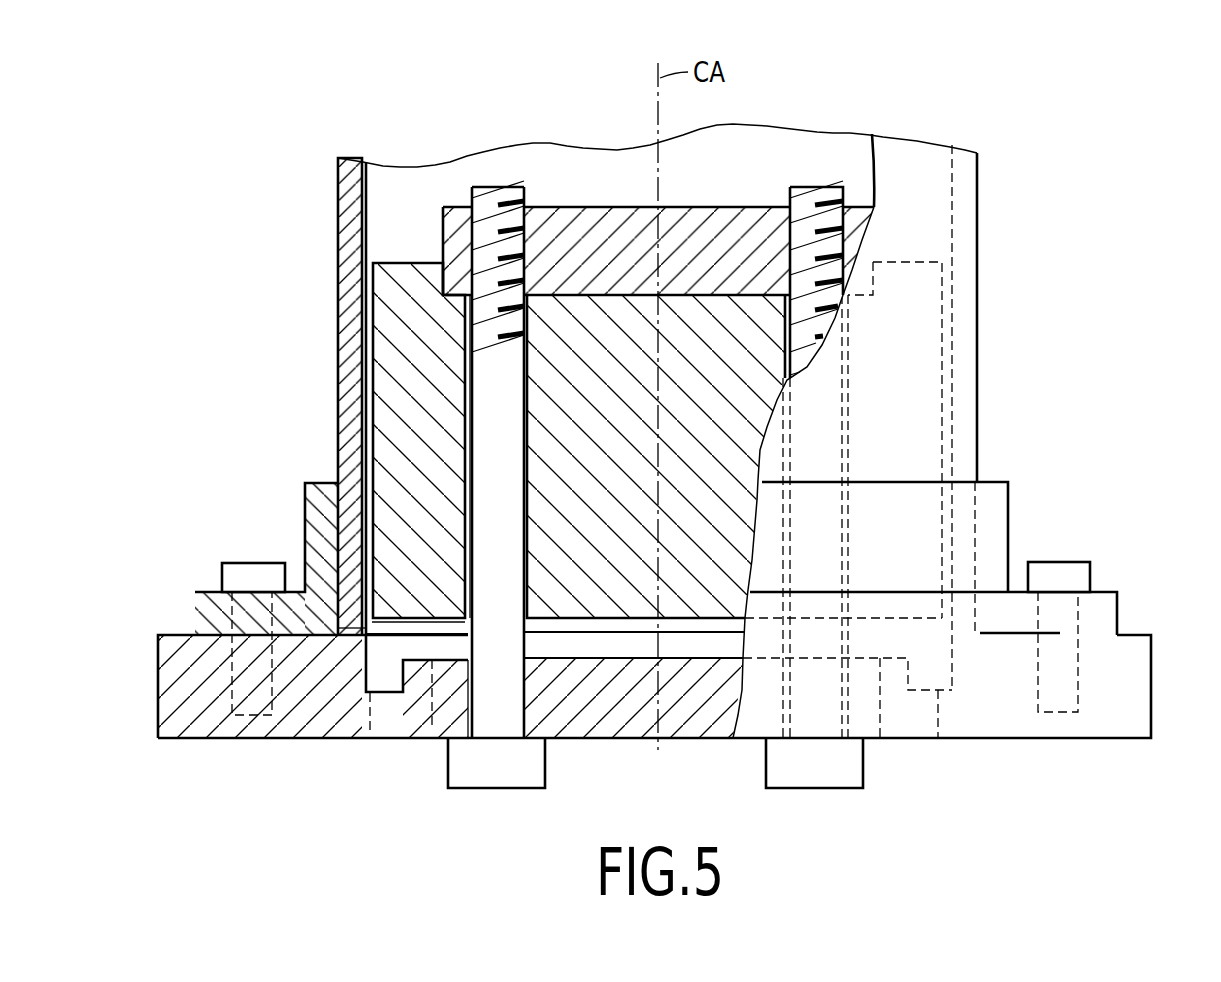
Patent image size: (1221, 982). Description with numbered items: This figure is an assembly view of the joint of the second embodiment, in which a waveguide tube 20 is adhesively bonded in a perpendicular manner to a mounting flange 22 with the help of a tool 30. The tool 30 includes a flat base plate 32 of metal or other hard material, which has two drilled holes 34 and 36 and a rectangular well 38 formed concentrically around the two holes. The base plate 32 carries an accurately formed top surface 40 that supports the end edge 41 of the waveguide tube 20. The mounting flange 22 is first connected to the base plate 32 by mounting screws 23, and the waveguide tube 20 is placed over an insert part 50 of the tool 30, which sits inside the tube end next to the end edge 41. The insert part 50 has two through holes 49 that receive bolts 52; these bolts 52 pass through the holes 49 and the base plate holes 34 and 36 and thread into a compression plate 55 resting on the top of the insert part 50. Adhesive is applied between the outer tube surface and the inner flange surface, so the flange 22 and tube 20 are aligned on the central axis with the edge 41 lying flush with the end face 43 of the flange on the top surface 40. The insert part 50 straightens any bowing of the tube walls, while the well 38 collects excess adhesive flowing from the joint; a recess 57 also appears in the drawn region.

The waveguide tube 20 is at (978, 228).
The mounting flange 22 is at (315, 508).
The mounting screws 23 is at (238, 575).
The tool 30 is at (914, 46).
The base plate 32 is at (1115, 695).
The drilled hole 34 is at (545, 680).
The drilled hole 36 is at (783, 705).
The rectangular well 38 is at (380, 692).
The top surface 40 is at (1133, 634).
The end edge 41 is at (344, 628).
The end face 43 is at (1015, 635).
The through holes 49 is at (466, 362).
The insert part 50 is at (410, 343).
The bolts 52 is at (806, 218).
The compression plate 55 is at (600, 225).
The recess 57 is at (947, 482).